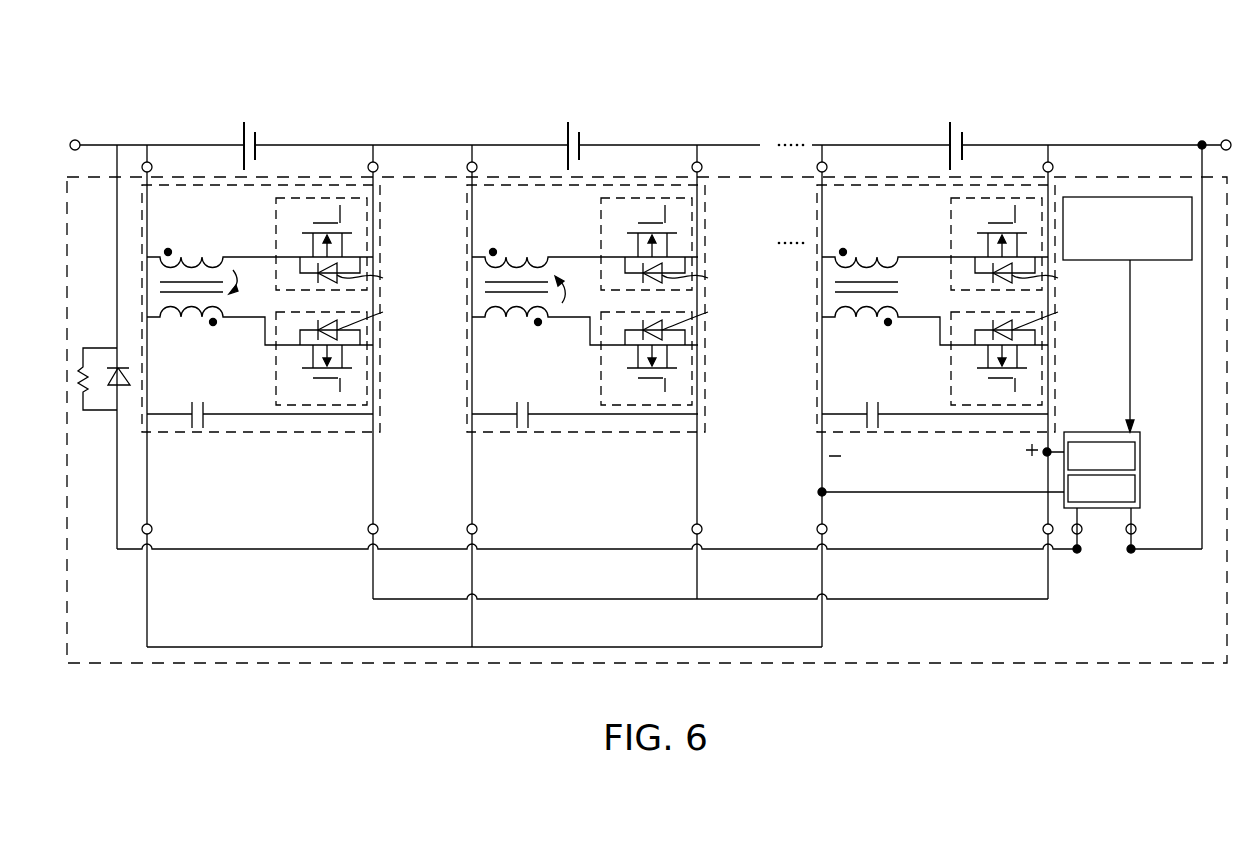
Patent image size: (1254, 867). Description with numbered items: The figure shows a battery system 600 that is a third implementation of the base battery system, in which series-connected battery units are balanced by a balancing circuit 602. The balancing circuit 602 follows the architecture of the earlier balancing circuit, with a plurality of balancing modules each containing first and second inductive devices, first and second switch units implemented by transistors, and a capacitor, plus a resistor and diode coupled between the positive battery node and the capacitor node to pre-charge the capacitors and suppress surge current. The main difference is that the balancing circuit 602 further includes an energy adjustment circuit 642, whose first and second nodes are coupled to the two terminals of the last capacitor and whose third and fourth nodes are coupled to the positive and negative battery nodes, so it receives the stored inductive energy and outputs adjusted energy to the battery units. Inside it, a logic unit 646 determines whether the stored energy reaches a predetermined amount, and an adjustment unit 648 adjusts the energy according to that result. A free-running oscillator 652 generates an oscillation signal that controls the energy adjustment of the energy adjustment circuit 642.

The battery system 600 is at (1063, 62).
The balancing circuit 602 is at (158, 663).
The energy adjustment circuit 642 is at (1102, 518).
The logic unit 646 is at (1101, 456).
The adjustment unit 648 is at (1101, 488).
The free-running oscillator 652 is at (1100, 197).